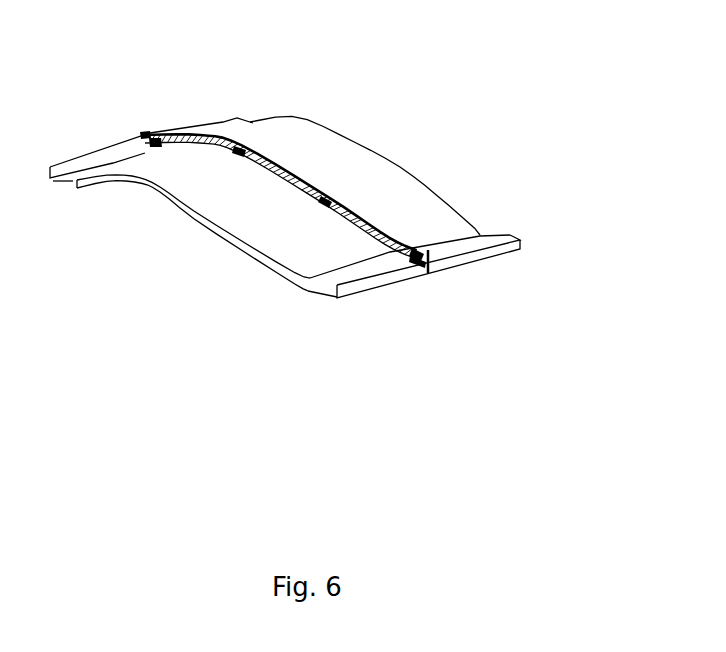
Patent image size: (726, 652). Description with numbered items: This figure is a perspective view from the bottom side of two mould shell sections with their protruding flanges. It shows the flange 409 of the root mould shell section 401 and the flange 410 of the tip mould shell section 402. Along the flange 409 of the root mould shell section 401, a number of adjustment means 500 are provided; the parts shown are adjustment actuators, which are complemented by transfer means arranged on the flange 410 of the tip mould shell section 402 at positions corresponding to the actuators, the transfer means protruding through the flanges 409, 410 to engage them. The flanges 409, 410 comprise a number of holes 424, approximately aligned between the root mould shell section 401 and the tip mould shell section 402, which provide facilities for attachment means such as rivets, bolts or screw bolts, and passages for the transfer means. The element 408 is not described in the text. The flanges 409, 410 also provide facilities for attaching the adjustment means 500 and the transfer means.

The root mould shell section 401 is at (253, 212).
The tip mould shell section 402 is at (366, 182).
The lower layer of strip 408 is at (237, 152).
The flange 409 is at (148, 126).
The flange 410 is at (387, 233).
The holes 424 is at (210, 125).
The adjustment means 500 is at (243, 250).